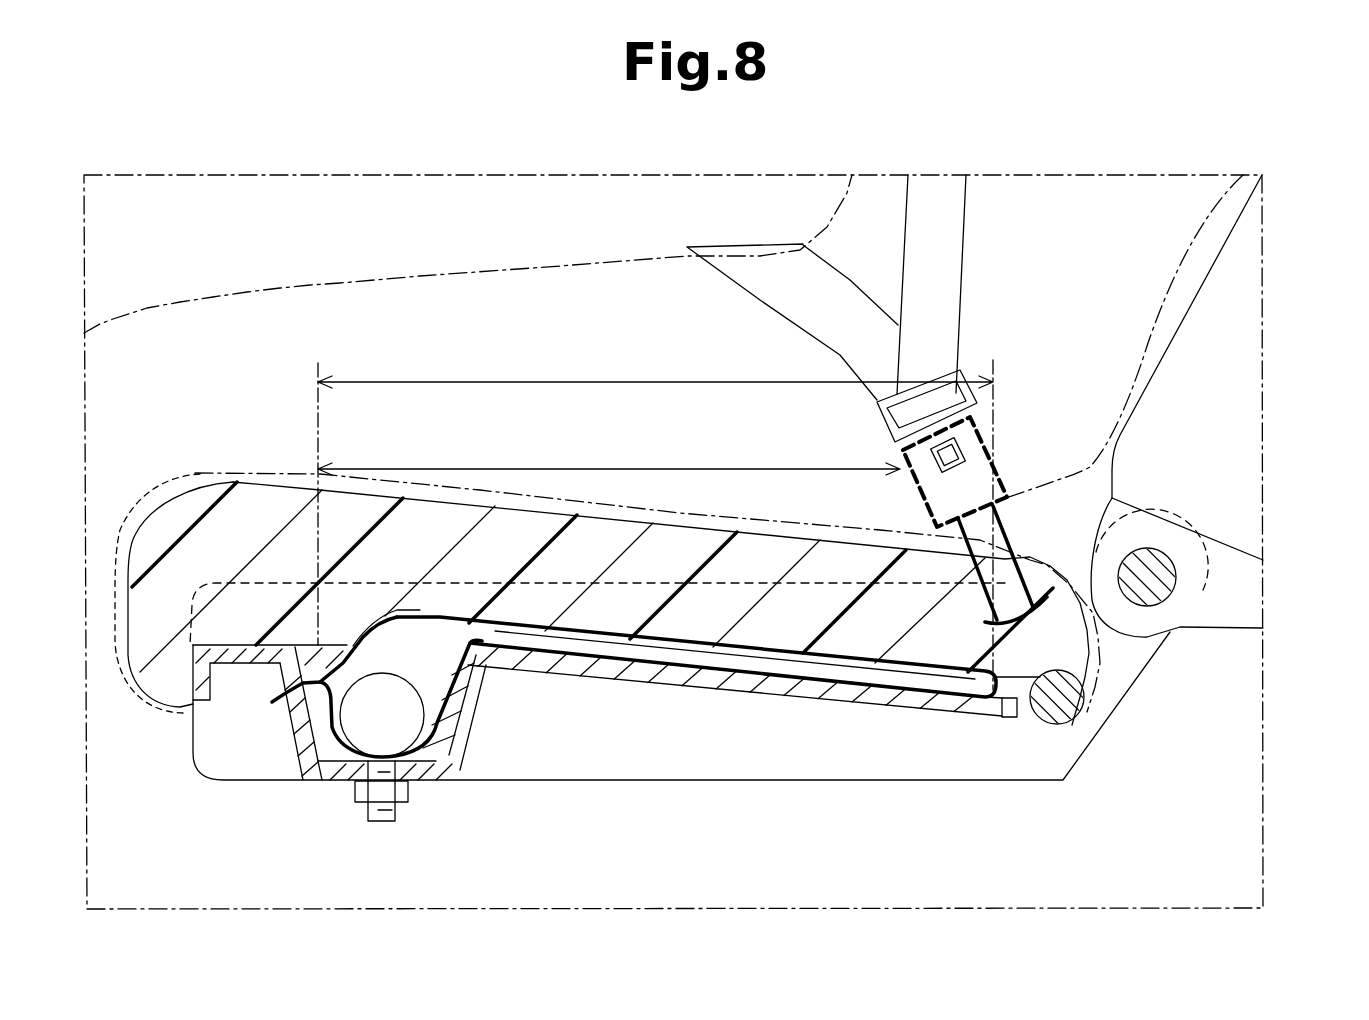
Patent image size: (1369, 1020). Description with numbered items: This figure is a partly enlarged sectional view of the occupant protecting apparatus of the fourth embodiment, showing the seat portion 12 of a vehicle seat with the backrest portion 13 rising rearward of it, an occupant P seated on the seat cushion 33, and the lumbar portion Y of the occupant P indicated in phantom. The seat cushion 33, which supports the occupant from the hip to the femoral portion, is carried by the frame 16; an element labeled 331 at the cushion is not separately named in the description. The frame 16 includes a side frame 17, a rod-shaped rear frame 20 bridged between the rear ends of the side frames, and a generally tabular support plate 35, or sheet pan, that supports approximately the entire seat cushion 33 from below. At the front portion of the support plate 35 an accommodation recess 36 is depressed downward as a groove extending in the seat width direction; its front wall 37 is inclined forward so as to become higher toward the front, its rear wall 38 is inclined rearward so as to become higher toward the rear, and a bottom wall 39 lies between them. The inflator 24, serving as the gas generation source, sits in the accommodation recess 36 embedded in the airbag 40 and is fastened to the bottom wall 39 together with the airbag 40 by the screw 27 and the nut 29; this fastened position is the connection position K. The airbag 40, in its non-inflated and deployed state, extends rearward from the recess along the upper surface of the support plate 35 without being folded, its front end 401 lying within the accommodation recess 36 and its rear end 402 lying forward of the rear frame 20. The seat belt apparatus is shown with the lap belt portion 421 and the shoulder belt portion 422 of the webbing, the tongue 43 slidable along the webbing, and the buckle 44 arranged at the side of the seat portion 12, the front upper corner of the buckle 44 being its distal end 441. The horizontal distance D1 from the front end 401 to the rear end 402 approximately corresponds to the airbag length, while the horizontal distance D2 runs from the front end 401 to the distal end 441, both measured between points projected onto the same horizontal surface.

The seat portion 12 is at (1123, 687).
The backrest portion 13 is at (1255, 463).
The frame 16 is at (681, 747).
The side frame 17 is at (746, 768).
The rear frame 20 is at (1073, 718).
The inflator 24 is at (393, 690).
The screw 27 is at (370, 817).
The nut 29 is at (360, 790).
The seat cushion 33 is at (205, 486).
The cushion cover 331 is at (133, 508).
The support plate 35 is at (668, 683).
The accommodation recess 36 is at (307, 708).
The front wall 37 is at (303, 752).
The rear wall 38 is at (473, 683).
The bottom wall 39 is at (420, 778).
The airbag 40 is at (440, 710).
The front end 401 is at (293, 688).
The rear end 402 is at (1003, 718).
The lap belt portion 421 is at (757, 273).
The shoulder belt portion 422 is at (952, 230).
The tongue 43 is at (960, 367).
The buckle 44 is at (933, 507).
The distal end 441 is at (900, 451).
The occupant P is at (310, 283).
The lumbar portion Y is at (1185, 310).
The connection position K is at (383, 760).
The horizontal distance D1 is at (547, 382).
The horizontal distance D2 is at (548, 469).